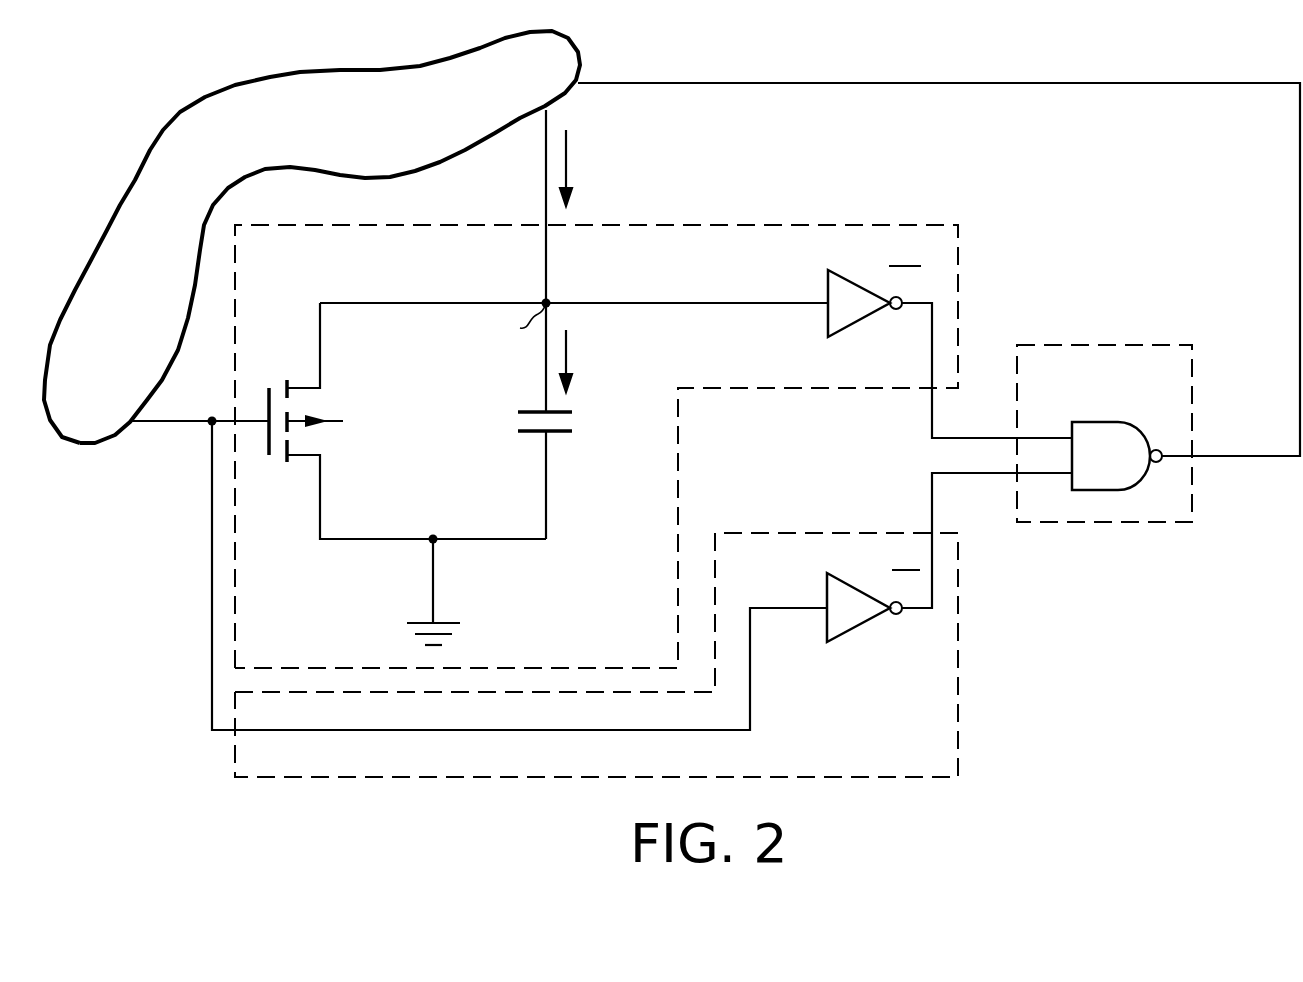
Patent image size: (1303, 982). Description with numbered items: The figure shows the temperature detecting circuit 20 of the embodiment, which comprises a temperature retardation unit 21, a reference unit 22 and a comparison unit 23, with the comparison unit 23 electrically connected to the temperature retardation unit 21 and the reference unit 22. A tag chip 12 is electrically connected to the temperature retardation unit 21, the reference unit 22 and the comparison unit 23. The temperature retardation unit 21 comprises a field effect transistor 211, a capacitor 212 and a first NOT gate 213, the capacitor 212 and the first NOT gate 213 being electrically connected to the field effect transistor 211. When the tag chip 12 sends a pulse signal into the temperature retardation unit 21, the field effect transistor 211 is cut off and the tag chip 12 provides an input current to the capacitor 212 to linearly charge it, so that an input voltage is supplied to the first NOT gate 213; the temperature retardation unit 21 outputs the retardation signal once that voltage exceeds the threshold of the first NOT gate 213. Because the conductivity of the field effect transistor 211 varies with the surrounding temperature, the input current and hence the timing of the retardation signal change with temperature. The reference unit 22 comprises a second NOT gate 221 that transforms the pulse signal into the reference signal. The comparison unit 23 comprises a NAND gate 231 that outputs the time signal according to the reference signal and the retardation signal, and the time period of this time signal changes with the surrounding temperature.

The tag chip 12 is at (284, 138).
The temperature detecting circuit 20 is at (156, 663).
The temperature retardation unit 21 is at (960, 248).
The reference unit 22 is at (960, 612).
The comparison unit 23 is at (1160, 345).
The field effect transistor 211 is at (280, 388).
The capacitor 212 is at (575, 425).
The first NOT gate 213 is at (863, 322).
The second NOT gate 221 is at (862, 625).
The NAND gate 231 is at (1100, 422).